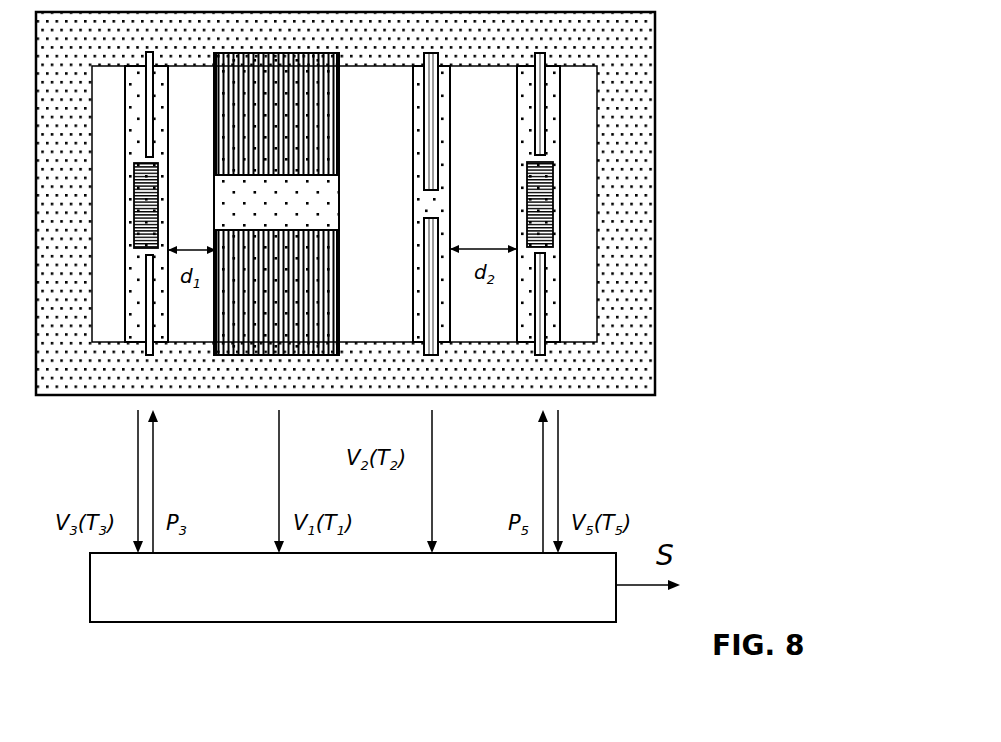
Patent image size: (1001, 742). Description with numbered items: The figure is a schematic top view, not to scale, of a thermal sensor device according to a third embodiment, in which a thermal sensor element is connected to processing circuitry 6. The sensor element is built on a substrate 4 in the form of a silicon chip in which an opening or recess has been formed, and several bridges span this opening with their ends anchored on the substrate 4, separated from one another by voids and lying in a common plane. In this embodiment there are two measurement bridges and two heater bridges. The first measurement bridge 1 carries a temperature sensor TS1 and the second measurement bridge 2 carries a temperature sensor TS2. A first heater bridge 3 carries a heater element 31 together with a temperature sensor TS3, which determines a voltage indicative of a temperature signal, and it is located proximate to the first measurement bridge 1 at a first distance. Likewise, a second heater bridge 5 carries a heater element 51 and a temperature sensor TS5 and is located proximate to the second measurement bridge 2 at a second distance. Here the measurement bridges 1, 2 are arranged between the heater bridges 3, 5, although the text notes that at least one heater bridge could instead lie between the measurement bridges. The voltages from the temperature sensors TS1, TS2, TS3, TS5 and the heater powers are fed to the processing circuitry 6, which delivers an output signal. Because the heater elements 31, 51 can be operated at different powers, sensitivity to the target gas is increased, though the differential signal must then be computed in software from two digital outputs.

The first measurement bridge 1 is at (337, 200).
The second measurement bridge 2 is at (418, 203).
The first heater bridge 3 is at (125, 207).
The heater element 31 is at (137, 174).
The substrate 4 is at (640, 120).
The second heater bridge 5 is at (550, 262).
The heater element 51 is at (527, 205).
The processing circuitry 6 is at (353, 587).
The temperature sensor TS1 is at (330, 178).
The temperature sensor TS2 is at (430, 120).
The temperature sensor TS3 is at (144, 120).
The temperature sensor TS5 is at (540, 121).